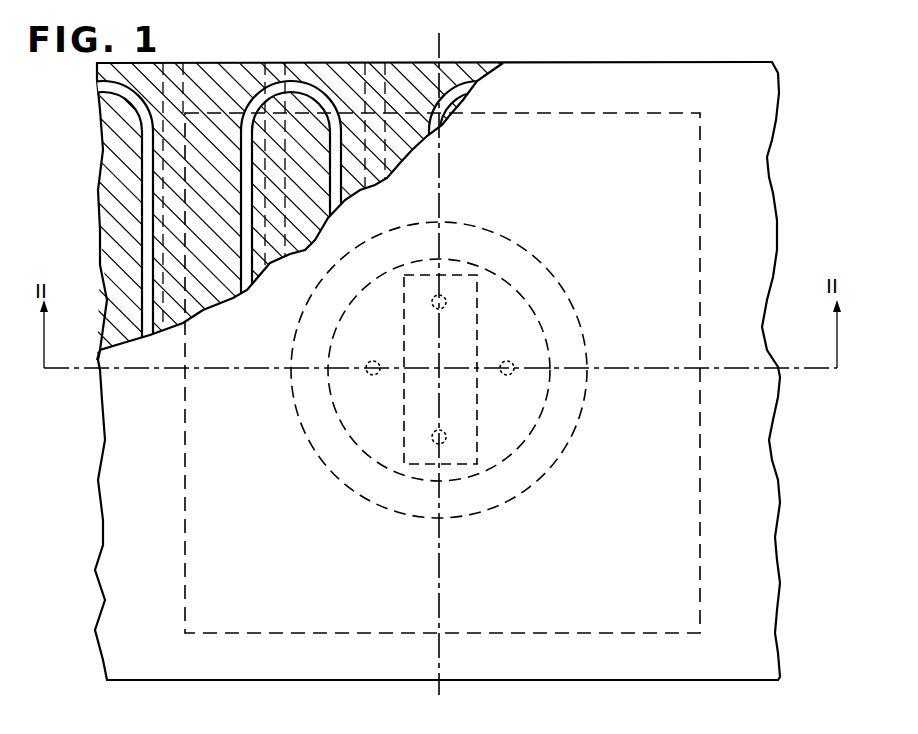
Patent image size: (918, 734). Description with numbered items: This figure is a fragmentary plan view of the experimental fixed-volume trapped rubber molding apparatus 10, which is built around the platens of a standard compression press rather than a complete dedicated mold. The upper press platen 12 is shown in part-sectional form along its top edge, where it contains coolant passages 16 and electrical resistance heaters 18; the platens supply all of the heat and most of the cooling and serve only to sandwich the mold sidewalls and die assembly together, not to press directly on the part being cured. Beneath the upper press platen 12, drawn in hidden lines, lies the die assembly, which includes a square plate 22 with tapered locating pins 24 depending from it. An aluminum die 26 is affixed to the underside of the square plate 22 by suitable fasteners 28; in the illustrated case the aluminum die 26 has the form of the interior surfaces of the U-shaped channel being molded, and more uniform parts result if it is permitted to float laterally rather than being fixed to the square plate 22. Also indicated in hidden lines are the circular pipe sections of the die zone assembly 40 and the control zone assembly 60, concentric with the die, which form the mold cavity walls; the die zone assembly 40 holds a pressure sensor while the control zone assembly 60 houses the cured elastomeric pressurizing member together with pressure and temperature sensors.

The fixed-volume trapped rubber molding apparatus 10 is at (567, 53).
The upper press platen 12 is at (217, 58).
The coolant passages 16 is at (303, 82).
The electrical resistance heaters 18 is at (170, 63).
The square plate 22 is at (673, 618).
The tapered locating pins 24 is at (372, 360).
The aluminum die 26 is at (478, 423).
The fasteners 28 is at (446, 297).
The die zone assembly 40 is at (567, 348).
The control zone assembly 60 is at (487, 370).